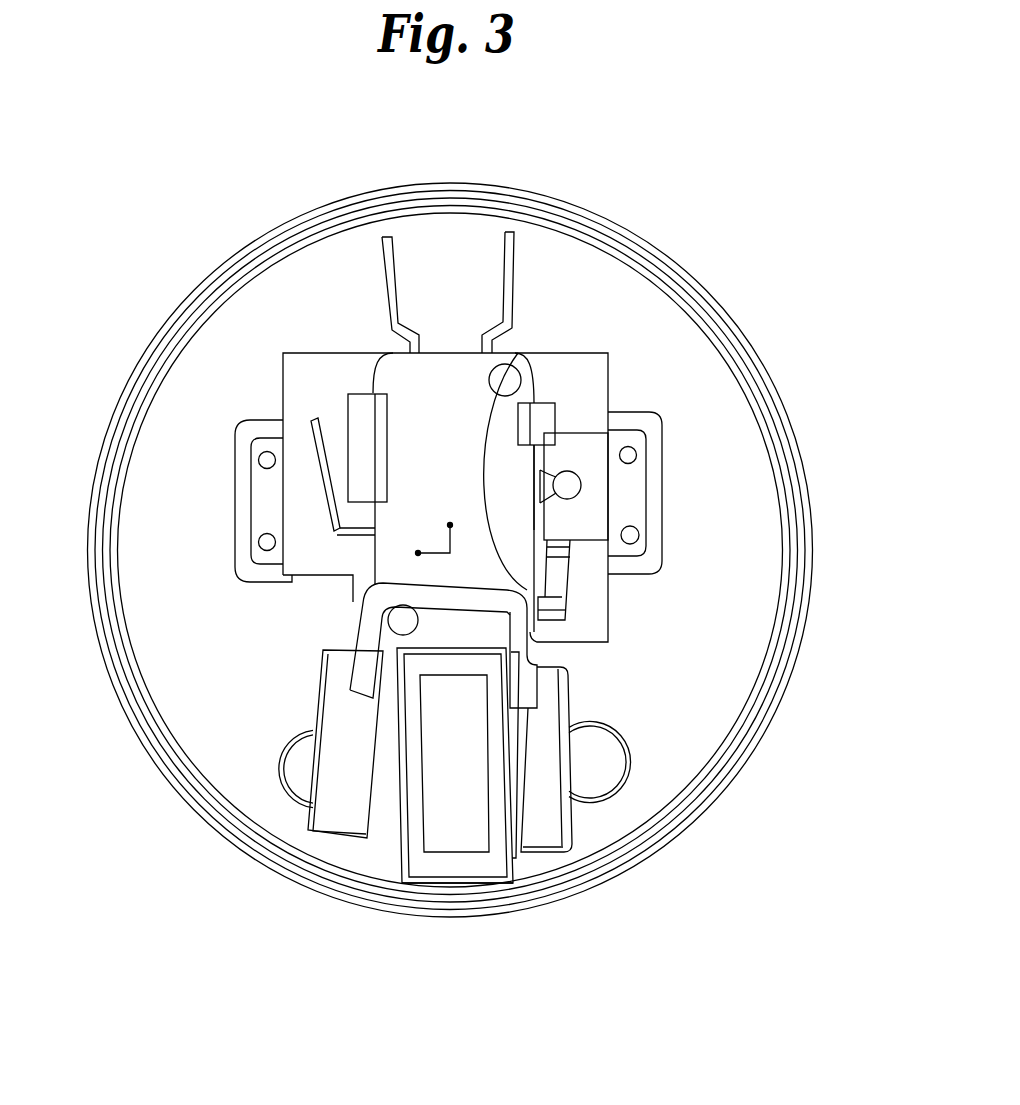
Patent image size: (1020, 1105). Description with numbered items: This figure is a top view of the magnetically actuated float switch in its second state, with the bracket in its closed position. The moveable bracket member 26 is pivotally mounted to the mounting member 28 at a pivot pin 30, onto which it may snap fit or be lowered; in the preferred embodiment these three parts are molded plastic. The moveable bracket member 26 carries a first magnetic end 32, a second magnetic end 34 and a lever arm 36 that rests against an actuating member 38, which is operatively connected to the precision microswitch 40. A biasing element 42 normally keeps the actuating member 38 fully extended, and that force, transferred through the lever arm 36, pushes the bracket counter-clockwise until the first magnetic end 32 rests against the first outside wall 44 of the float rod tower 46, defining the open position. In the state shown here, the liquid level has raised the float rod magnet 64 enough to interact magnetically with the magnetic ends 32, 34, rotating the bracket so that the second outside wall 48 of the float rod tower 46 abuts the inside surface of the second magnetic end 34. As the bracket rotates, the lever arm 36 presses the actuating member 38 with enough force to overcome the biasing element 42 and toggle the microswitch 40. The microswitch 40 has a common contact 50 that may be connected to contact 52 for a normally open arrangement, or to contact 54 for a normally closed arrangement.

The moveable bracket member 26 is at (377, 597).
The mounting member 28 is at (608, 393).
The pivot pin 30 is at (578, 487).
The first magnetic end 32 is at (346, 812).
The second magnetic end 34 is at (541, 804).
The lever arm 36 is at (550, 612).
The actuating member 38 is at (552, 584).
The precision microswitch 40 is at (555, 403).
The biasing element 42 is at (503, 447).
The first outside wall 44 is at (398, 837).
The float rod tower 46 is at (483, 877).
The second outside wall 48 is at (514, 859).
The common contact 50 is at (313, 445).
The contact 52 is at (385, 250).
The contact 54 is at (515, 258).
The float rod magnet 64 is at (452, 810).